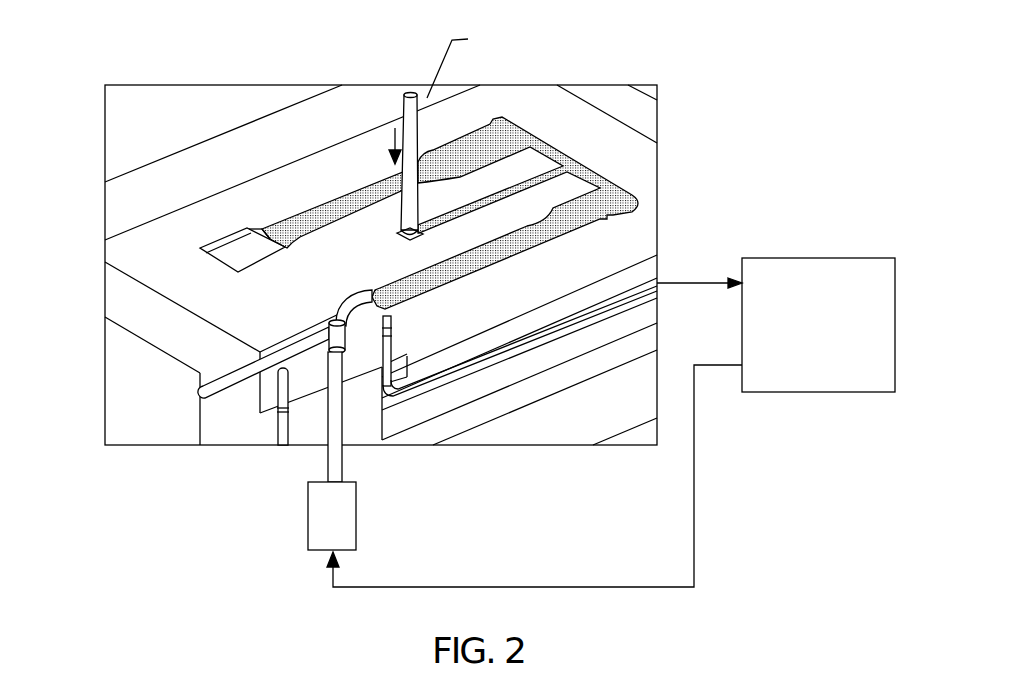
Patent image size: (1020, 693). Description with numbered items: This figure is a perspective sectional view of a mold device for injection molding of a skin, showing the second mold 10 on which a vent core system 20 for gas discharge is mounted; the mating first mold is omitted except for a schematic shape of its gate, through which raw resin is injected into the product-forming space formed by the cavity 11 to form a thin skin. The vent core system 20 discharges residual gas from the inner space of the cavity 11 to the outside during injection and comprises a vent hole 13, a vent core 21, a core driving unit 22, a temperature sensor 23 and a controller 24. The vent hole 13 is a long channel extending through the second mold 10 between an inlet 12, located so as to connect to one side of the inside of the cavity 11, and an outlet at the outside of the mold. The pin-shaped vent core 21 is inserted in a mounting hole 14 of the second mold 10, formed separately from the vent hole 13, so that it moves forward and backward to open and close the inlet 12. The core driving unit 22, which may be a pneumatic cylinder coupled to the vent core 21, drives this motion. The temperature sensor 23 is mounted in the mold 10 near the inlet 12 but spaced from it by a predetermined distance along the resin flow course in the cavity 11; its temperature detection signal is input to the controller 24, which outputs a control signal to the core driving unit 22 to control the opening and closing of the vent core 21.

The second mold 10 is at (364, 225).
The cavity 11 is at (238, 256).
The inlet 12 is at (334, 337).
The vent hole 13 is at (303, 347).
The mounting hole 14 is at (293, 440).
The vent core system 20 is at (425, 410).
The vent core 21 is at (340, 432).
The core driving unit 22 is at (357, 518).
The temperature sensor 23 is at (390, 315).
The controller 24 is at (809, 257).